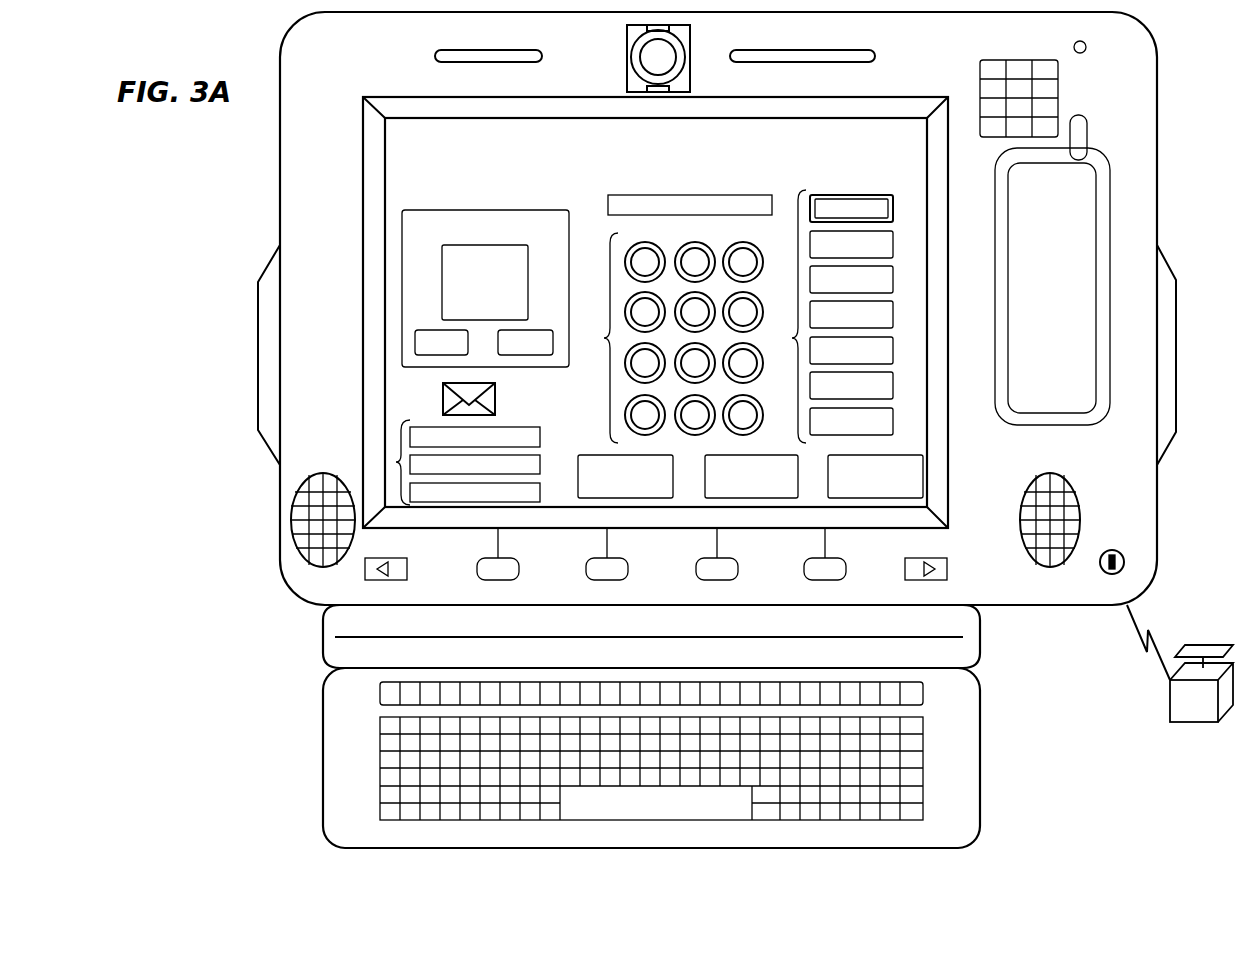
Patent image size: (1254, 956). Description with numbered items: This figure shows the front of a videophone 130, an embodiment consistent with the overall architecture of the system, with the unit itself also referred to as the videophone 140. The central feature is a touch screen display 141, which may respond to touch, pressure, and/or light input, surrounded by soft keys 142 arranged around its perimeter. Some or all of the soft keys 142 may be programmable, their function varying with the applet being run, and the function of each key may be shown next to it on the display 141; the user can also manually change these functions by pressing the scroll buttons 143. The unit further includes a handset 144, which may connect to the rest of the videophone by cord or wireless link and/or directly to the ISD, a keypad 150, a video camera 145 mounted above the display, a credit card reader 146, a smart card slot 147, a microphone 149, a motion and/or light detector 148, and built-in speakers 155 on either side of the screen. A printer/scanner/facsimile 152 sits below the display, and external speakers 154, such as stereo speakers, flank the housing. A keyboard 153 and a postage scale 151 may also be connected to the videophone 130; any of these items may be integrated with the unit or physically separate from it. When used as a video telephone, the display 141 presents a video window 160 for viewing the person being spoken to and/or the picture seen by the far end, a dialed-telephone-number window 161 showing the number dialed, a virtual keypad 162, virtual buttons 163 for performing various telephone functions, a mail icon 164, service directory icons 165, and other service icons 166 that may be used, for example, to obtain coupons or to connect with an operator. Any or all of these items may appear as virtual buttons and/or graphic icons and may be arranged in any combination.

The videophone 130 is at (1168, 35).
The videophone 140 is at (1158, 94).
The touch screen display 141 is at (365, 237).
The soft keys 142 is at (519, 567).
The scroll buttons 143 is at (408, 566).
The handset 144 is at (1065, 284).
The video camera 145 is at (627, 36).
The credit card reader 146 is at (466, 63).
The smart card slot 147 is at (846, 63).
The motion and/or light detector 148 is at (1086, 50).
The microphone 149 is at (1108, 548).
The keypad 150 is at (992, 60).
The postage scale 151 is at (1170, 710).
The printer/scanner/facsimile 152 is at (982, 632).
The keyboard 153 is at (982, 752).
The external speakers 154 is at (258, 362).
The built-in speaker 155 is at (296, 548).
The video window 160 is at (540, 218).
The dialed-telephone-number window 161 is at (703, 208).
The virtual keypad 162 is at (668, 338).
The virtual buttons 163 is at (826, 316).
The mail icon 164 is at (497, 402).
The service directory icons 165 is at (398, 468).
The service icons 166 is at (592, 455).